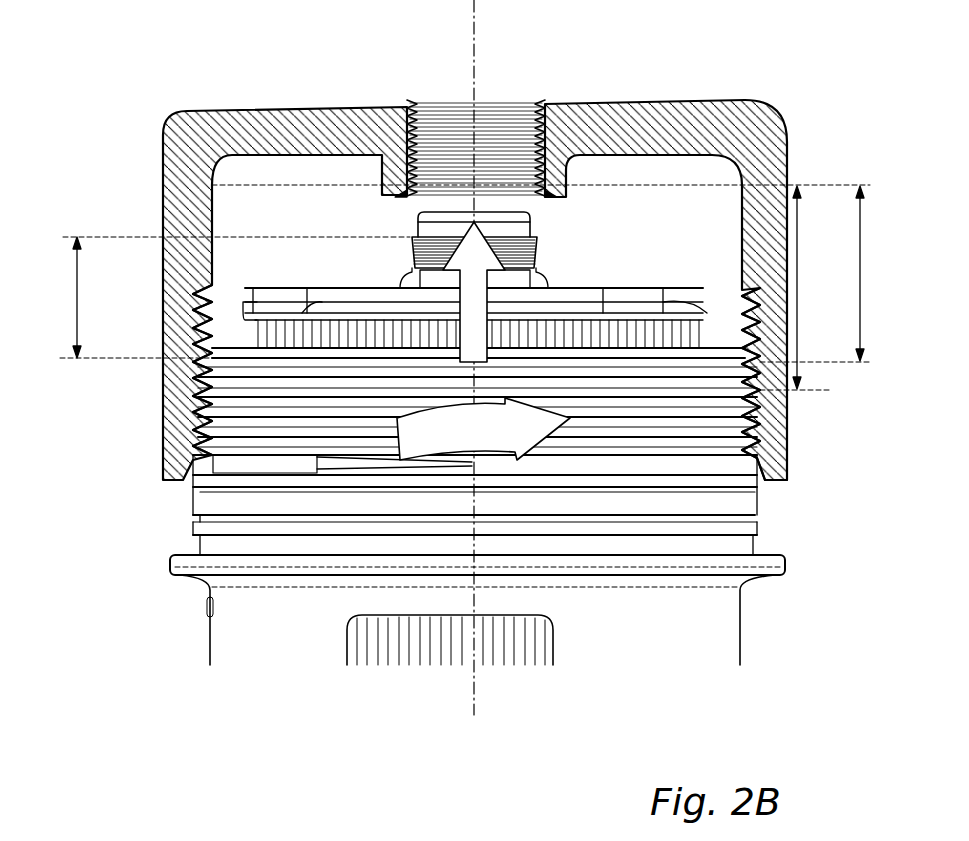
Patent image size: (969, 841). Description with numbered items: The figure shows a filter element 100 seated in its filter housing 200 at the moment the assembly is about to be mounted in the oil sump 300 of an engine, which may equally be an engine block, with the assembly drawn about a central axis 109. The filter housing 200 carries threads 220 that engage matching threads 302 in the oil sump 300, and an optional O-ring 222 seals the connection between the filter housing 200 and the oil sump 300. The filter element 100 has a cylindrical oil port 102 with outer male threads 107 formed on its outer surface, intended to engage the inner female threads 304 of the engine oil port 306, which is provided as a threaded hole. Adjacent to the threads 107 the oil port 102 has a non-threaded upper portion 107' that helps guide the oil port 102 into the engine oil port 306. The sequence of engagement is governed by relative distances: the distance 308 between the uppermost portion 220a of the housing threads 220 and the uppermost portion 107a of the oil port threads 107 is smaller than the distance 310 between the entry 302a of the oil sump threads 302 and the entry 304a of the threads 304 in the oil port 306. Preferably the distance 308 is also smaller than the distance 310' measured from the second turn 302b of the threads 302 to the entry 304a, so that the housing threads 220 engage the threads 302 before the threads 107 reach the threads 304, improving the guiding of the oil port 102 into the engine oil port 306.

The filter element 100 is at (231, 196).
The oil port 102 is at (406, 218).
The threads 107 is at (418, 262).
The uppermost portion of the threads 107a is at (404, 243).
The non-threaded upper portion 107' is at (591, 244).
The central axis 109 is at (488, 22).
The filter housing 200 is at (188, 605).
The threads 220 is at (195, 402).
The uppermost portion of the threads 220a is at (194, 345).
The O-ring 222 is at (186, 499).
The oil sump 300 is at (187, 218).
The matching threads 302 is at (192, 279).
The entry of the threads 302a is at (784, 418).
The second turn of the threads 302b is at (757, 341).
The matching threads 304 is at (450, 111).
The entry of the threads 304a is at (552, 181).
The engine oil port 306 is at (436, 75).
The distance 308 is at (220, 297).
The distance 310 is at (803, 288).
The distance 310' is at (837, 274).